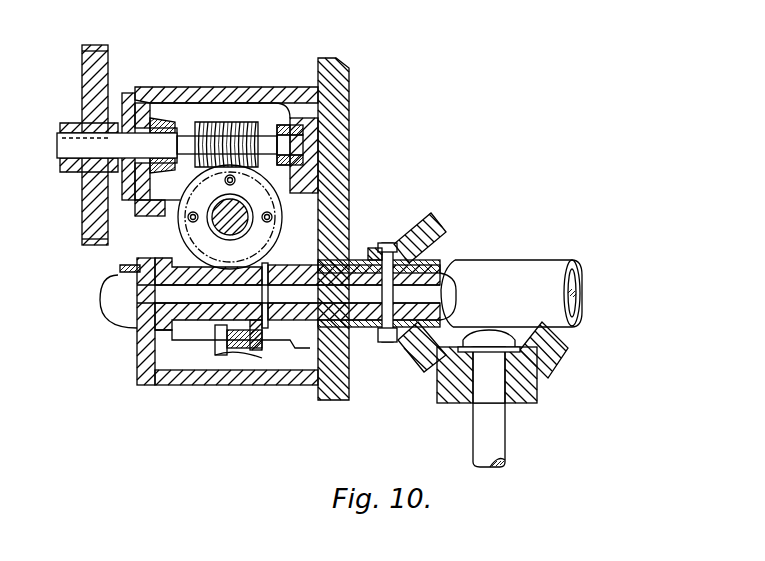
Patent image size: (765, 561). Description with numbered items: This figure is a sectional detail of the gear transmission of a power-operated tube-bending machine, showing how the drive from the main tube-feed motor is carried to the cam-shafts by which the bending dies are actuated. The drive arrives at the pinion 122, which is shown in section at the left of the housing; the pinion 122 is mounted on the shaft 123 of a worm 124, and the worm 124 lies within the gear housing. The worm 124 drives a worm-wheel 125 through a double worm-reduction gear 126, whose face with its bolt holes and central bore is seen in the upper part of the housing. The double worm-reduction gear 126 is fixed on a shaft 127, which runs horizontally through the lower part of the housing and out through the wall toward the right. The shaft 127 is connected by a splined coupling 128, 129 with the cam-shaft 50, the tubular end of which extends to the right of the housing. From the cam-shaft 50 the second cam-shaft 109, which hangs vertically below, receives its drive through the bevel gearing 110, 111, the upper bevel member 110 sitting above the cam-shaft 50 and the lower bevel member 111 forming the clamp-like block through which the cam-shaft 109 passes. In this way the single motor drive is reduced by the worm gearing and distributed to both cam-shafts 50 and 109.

The cam-shaft 50 is at (545, 262).
The cam-shaft 109 is at (495, 428).
The bevel gearing 110 is at (424, 230).
The bevel gearing 111 is at (553, 353).
The pinion 122 is at (85, 74).
The shaft 123 is at (57, 145).
The worm 124 is at (245, 117).
The worm-wheel 125 is at (237, 352).
The double worm-reduction gear 126 is at (215, 242).
The shaft 127 is at (192, 325).
The splined coupling 128 is at (313, 372).
The splined coupling 129 is at (346, 260).